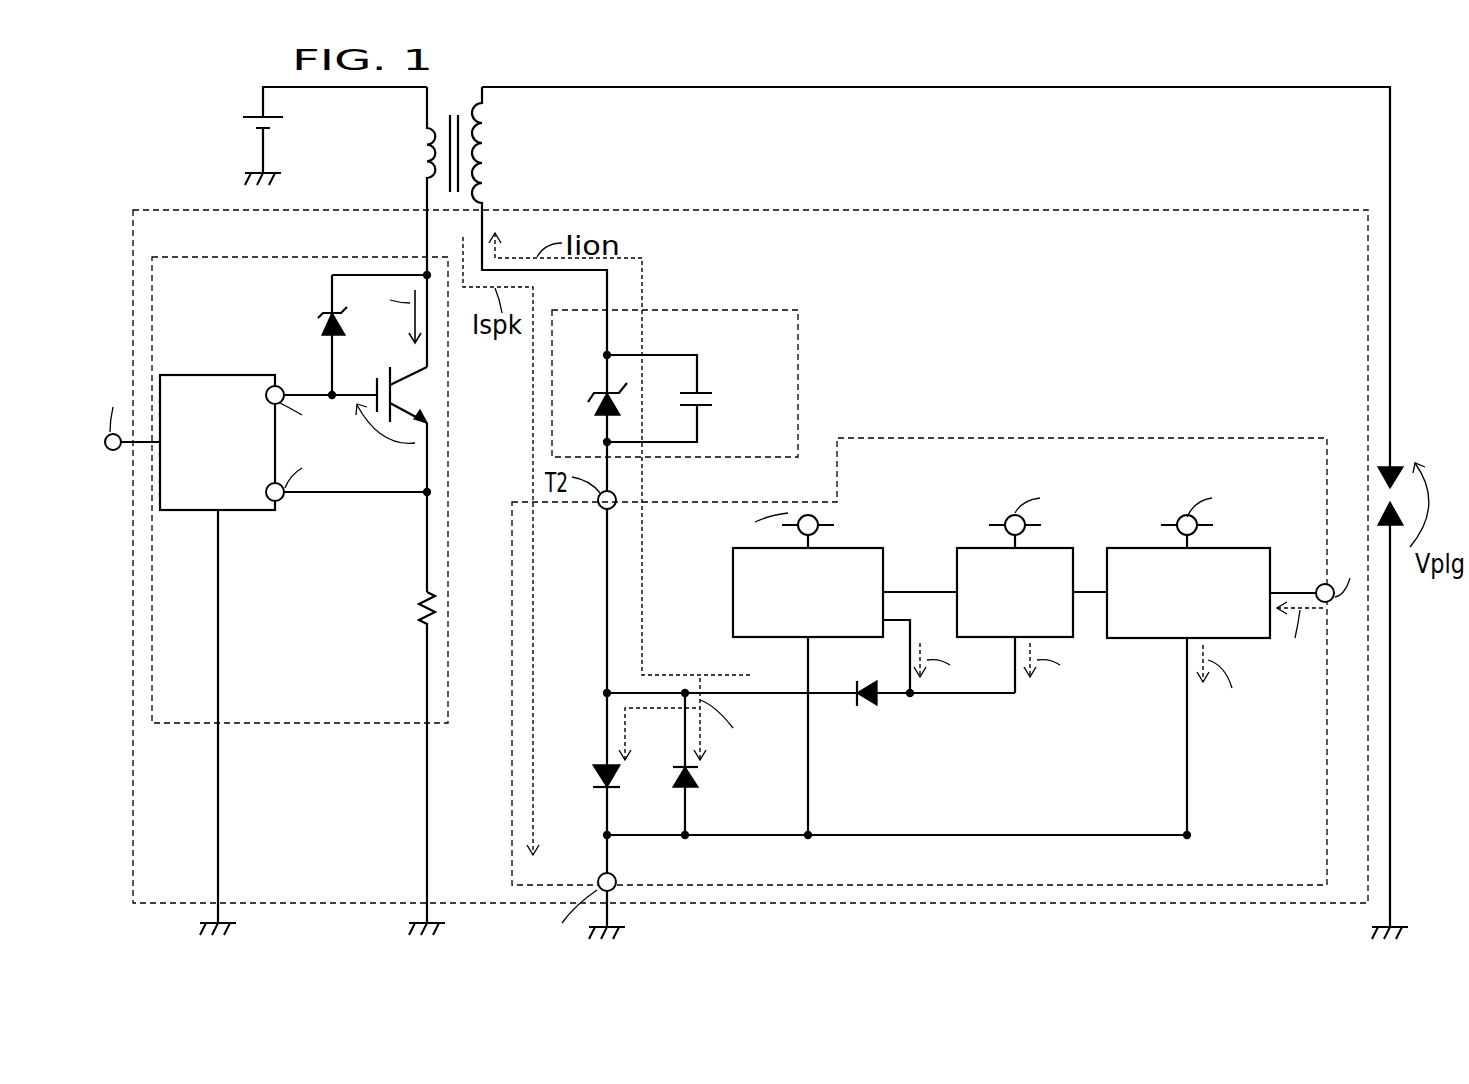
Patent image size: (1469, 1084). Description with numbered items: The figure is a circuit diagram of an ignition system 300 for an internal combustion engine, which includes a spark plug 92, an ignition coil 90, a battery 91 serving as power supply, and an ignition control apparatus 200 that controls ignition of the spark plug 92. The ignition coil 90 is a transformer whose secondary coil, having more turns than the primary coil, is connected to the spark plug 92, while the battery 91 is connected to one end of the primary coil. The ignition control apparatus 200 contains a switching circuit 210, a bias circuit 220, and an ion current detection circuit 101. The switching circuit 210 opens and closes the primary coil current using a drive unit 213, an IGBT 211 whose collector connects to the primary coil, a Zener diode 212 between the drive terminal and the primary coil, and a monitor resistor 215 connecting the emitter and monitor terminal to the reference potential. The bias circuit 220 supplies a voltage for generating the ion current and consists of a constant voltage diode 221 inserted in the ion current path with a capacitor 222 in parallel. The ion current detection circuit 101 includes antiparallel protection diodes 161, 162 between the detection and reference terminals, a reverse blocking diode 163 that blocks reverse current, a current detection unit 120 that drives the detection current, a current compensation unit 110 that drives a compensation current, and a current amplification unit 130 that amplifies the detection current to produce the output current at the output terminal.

The ignition system 300 is at (162, 138).
The battery 91 is at (273, 122).
The ignition coil 90 is at (482, 155).
The spark plug 92 is at (1400, 500).
The ignition control apparatus 200 is at (1278, 208).
The switching circuit 210 is at (227, 253).
The drive unit 213 is at (185, 373).
The Zener diode 212 is at (315, 320).
The IGBT 211 is at (387, 368).
The monitor resistor 215 is at (417, 610).
The bias circuit 220 is at (715, 310).
The constant voltage diode 221 is at (600, 400).
The capacitor 222 is at (713, 400).
The ion current detection circuit 101 is at (1237, 437).
The current compensation unit 110 is at (837, 545).
The current detection unit 120 is at (1045, 545).
The current amplification unit 130 is at (1223, 545).
The reverse blocking diode 163 is at (873, 672).
The protection diode 161 is at (597, 773).
The protection diode 162 is at (697, 775).